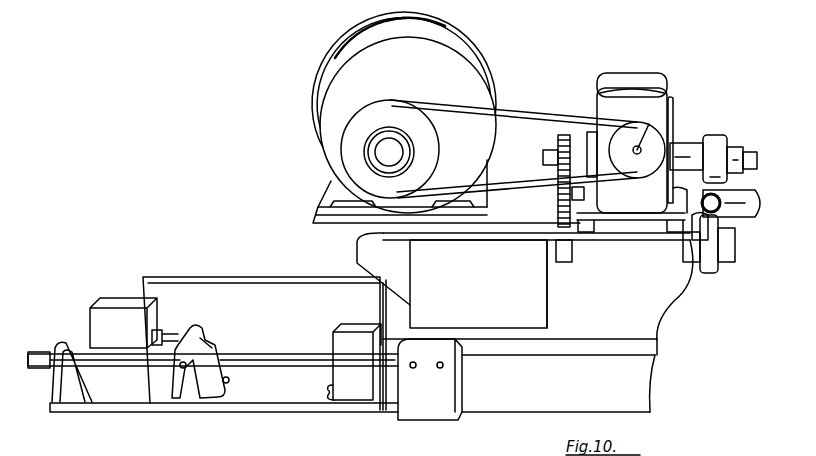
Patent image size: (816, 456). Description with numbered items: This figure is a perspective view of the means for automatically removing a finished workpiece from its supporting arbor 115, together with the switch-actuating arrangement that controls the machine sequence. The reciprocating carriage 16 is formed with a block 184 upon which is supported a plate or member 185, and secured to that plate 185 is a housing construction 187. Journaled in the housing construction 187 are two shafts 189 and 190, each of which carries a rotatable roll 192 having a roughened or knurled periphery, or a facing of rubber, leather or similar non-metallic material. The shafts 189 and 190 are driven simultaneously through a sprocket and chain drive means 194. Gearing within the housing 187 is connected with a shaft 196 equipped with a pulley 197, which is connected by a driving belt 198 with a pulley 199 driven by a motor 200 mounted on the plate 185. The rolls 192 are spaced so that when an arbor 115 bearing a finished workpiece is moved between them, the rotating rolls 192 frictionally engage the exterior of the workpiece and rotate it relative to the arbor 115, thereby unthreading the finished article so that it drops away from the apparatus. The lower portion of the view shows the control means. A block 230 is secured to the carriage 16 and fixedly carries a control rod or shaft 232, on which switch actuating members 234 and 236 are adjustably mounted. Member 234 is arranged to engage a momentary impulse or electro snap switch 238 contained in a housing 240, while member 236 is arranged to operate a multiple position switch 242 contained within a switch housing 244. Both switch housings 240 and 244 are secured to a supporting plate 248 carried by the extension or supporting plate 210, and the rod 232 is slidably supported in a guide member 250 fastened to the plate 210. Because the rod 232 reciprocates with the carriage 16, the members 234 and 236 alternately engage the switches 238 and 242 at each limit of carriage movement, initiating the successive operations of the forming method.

The carriage 16 is at (356, 250).
The arbor 115 is at (746, 186).
The block 184 is at (478, 284).
The plate 185 is at (497, 246).
The housing construction 187 is at (637, 73).
The shaft 189 is at (683, 136).
The shaft 190 is at (690, 270).
The roll 192 is at (725, 131).
The sprocket and chain drive means 194 is at (551, 207).
The shaft 196 is at (657, 121).
The pulley 197 is at (642, 183).
The driving belt 198 is at (553, 110).
The pulley 199 is at (340, 144).
The motor 200 is at (490, 41).
The supporting plate 210 is at (100, 415).
The block 230 is at (458, 421).
The control rod 232 is at (315, 371).
The switch actuating member 234 is at (208, 339).
The switch actuating member 236 is at (230, 381).
The electro snap switch 238 is at (178, 324).
The switch housing 240 is at (122, 300).
The multiple position switch 242 is at (347, 394).
The switch housing 244 is at (342, 324).
The supporting plate 248 is at (285, 277).
The guide member 250 is at (70, 341).